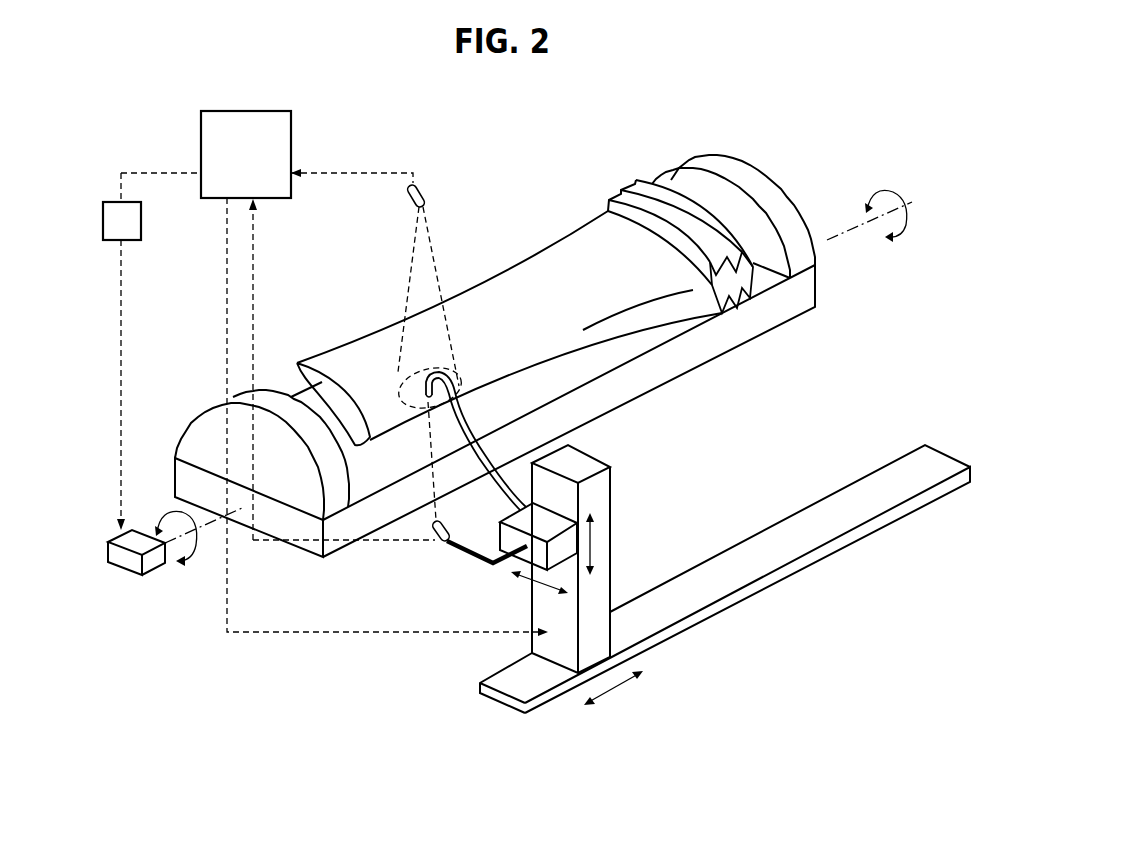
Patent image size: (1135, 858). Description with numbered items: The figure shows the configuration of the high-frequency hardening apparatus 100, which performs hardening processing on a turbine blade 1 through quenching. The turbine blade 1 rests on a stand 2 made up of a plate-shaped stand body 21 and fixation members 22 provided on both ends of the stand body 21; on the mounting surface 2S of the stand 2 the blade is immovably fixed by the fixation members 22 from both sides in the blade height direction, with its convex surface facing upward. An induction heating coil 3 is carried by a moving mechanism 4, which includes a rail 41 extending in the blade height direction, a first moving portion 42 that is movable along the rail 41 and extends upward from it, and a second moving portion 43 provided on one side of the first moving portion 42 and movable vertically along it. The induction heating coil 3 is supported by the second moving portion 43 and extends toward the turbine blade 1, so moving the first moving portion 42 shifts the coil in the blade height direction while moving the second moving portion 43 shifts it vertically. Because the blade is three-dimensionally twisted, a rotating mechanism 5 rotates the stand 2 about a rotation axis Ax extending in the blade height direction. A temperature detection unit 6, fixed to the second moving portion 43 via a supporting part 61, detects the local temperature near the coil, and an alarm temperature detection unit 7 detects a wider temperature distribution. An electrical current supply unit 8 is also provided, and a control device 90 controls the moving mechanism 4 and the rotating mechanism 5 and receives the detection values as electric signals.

The high-frequency hardening apparatus 100 is at (632, 137).
The turbine blade 1 is at (494, 290).
The stand 2 is at (524, 321).
The stand body 21 is at (757, 323).
The fixation members 22 is at (190, 432).
The mounting surface 2S is at (600, 360).
The induction heating coil 3 is at (406, 358).
The moving mechanism 4 is at (598, 455).
The rail 41 is at (755, 567).
The first moving portion 42 is at (602, 628).
The second moving portion 43 is at (605, 536).
The rotating mechanism 5 is at (121, 562).
The temperature detection unit 6 is at (437, 535).
The supporting part 61 is at (468, 558).
The alarm temperature detection unit 7 is at (425, 184).
The electrical current supply unit 8 is at (105, 221).
The control device 90 is at (291, 134).
The rotation axis Ax is at (205, 528).